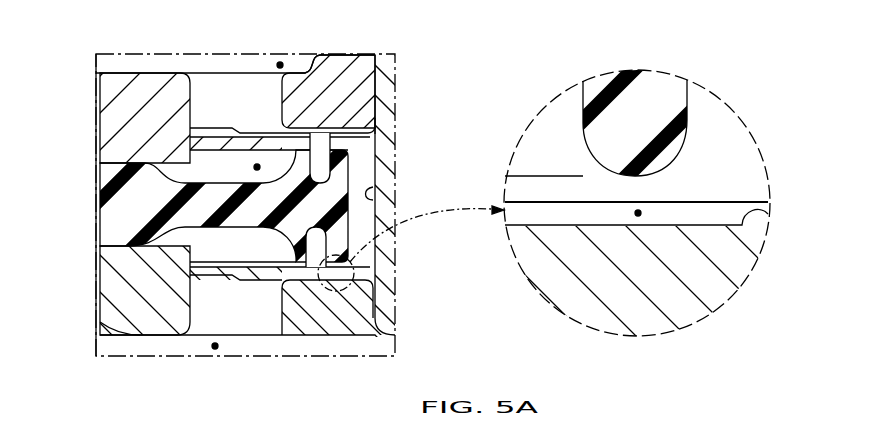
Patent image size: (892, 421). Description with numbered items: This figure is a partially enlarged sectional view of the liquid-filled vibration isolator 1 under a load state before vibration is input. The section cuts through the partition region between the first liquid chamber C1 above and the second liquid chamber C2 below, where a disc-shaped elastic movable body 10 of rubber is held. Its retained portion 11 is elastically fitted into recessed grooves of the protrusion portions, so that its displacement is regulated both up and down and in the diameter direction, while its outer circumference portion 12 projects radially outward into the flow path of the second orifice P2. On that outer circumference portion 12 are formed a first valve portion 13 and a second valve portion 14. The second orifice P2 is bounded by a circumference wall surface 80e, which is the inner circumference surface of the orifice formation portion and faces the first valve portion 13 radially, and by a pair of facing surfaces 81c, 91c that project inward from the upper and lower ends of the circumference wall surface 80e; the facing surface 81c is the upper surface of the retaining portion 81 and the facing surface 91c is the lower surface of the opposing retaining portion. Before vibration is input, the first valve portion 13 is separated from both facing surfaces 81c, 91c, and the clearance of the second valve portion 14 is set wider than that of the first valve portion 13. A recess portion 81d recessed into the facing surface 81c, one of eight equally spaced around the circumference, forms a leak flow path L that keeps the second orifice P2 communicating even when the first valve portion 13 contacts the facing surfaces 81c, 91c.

The liquid-filled vibration isolator 1 is at (412, 79).
The elastic movable body 10 is at (358, 180).
The retained portion 11 is at (103, 232).
The outer circumference portion 12 is at (218, 200).
The first valve portion 13 is at (345, 128).
The second valve portion 14 is at (311, 133).
The circumference wall surface 80e is at (373, 188).
The retaining portion 81 is at (708, 288).
The facing surface 81c is at (690, 190).
The recess portion 81d is at (763, 223).
The facing surface 91c is at (376, 126).
The first liquid chamber C1 is at (280, 65).
The second liquid chamber C2 is at (215, 346).
The second orifice P2 is at (257, 167).
The leak flow path L is at (638, 213).